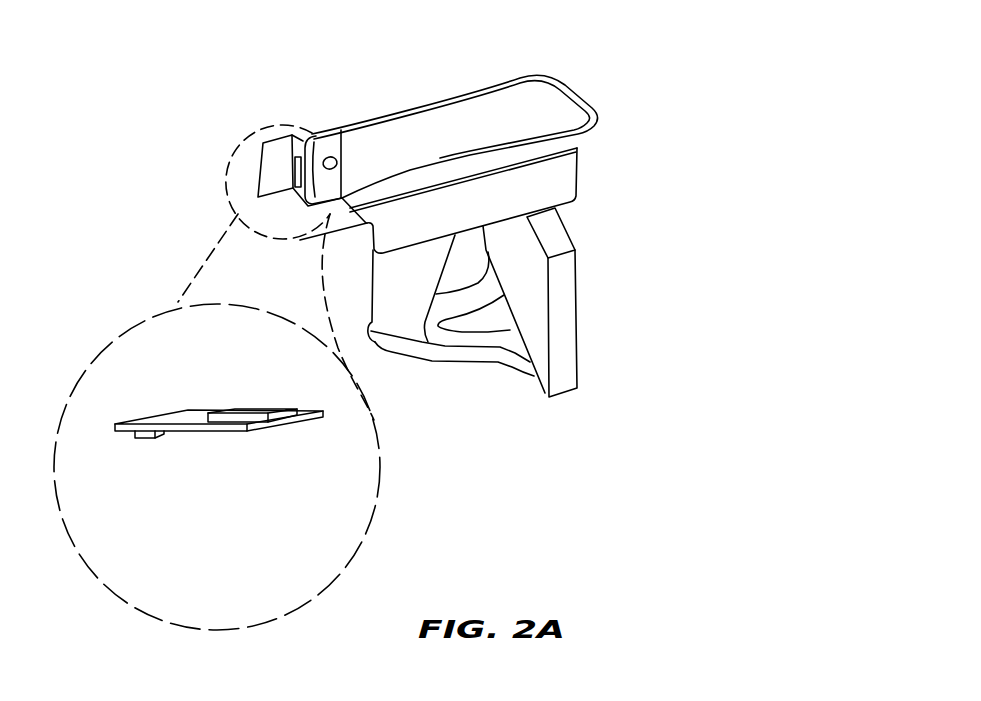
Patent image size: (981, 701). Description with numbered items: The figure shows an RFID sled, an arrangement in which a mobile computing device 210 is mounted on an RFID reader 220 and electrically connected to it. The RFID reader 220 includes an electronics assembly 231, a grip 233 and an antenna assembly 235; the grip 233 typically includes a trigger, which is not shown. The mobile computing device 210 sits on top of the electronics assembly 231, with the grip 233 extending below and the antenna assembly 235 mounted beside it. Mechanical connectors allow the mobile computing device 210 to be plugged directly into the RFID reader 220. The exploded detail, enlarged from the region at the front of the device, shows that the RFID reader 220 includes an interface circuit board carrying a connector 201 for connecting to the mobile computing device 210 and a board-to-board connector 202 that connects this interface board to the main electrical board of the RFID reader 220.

The connector 201 is at (322, 416).
The board-to-board connector 202 is at (150, 439).
The mobile computing device 210 is at (556, 80).
The RFID reader 220 is at (520, 224).
The electronics assembly 231 is at (579, 173).
The grip 233 is at (372, 278).
The antenna assembly 235 is at (578, 326).